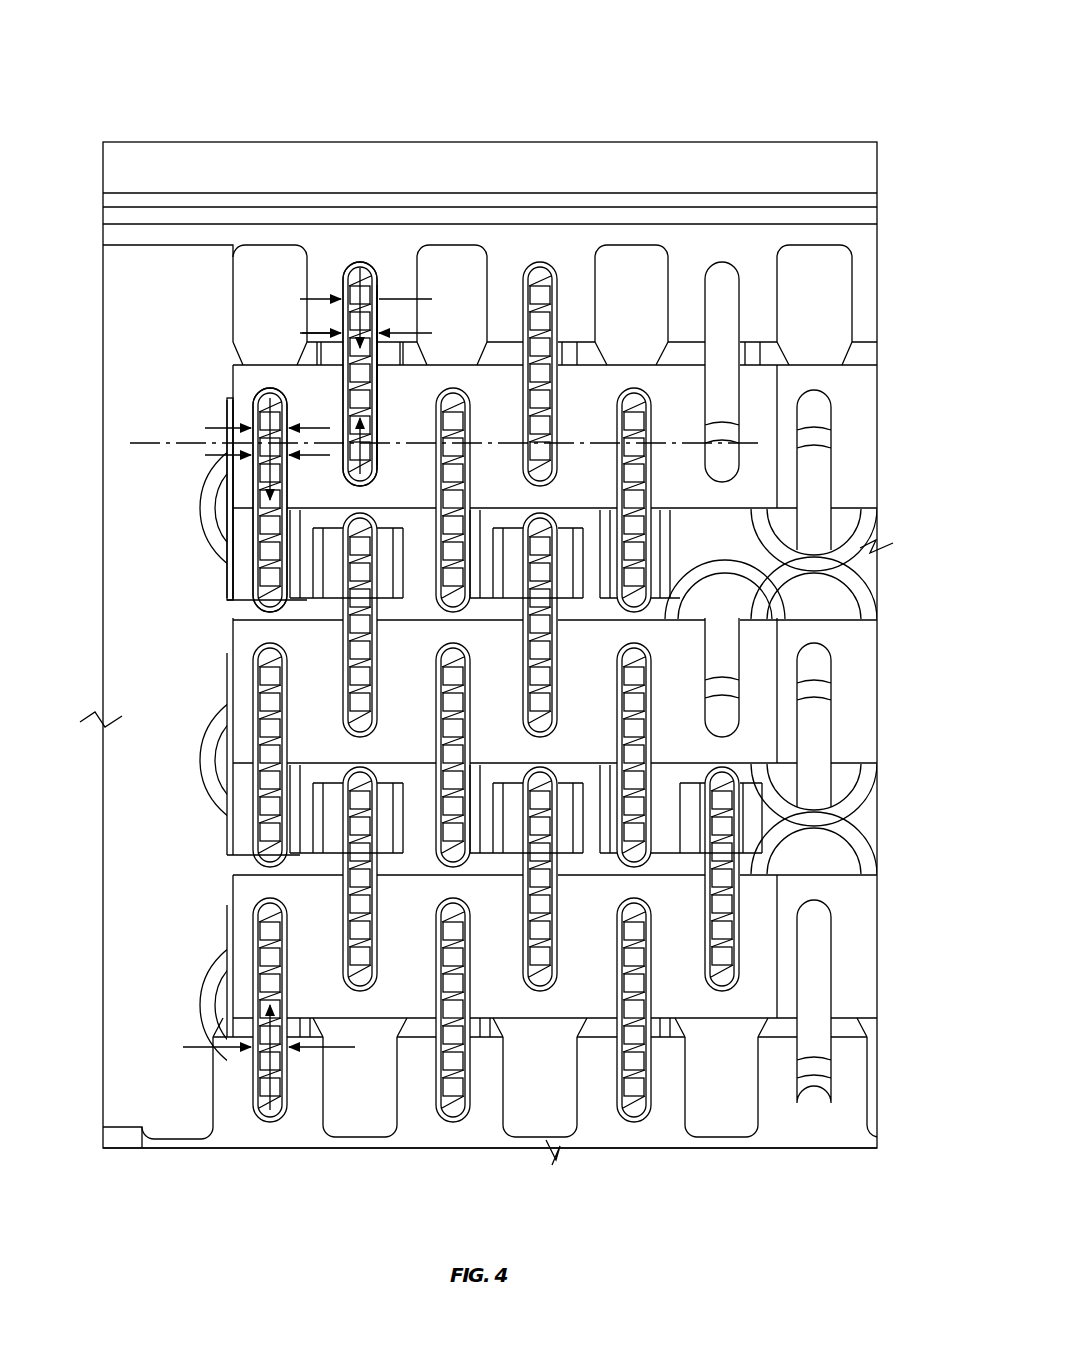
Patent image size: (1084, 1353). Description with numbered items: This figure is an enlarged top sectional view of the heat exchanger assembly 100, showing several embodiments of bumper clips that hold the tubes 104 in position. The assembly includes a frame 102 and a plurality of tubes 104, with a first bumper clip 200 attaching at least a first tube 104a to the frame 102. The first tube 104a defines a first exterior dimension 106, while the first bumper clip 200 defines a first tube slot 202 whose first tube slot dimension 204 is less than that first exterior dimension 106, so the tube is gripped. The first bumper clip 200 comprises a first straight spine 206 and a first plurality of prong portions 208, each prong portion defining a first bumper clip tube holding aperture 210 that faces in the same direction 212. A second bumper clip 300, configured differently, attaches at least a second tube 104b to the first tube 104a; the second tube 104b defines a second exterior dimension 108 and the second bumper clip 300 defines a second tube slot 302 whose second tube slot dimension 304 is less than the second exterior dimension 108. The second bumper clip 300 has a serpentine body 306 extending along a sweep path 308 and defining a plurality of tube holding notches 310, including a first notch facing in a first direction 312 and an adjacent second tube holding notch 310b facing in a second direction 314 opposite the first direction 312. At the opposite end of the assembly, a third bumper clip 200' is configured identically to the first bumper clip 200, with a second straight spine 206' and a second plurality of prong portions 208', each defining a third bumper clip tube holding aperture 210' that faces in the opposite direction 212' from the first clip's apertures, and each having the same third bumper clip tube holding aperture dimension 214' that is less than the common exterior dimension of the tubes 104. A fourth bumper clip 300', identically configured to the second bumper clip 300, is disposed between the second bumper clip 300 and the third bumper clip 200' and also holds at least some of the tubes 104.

The heat exchanger assembly 100 is at (553, 75).
The frame 102 is at (718, 210).
The tubes 104 is at (470, 465).
The first tube 104a is at (341, 283).
The second tube 104b is at (257, 547).
The first exterior dimension 106 is at (383, 290).
The second exterior dimension 108 is at (218, 428).
The first bumper clip 200 is at (362, 291).
The first tube slot 202 is at (300, 299).
The first tube slot dimension 204 is at (300, 333).
The first straight spine 206 is at (555, 259).
The first plurality of prong portions 208 is at (542, 293).
The first bumper clip tube holding aperture 210 is at (430, 321).
The same direction 212 is at (392, 197).
The second bumper clip 300 is at (224, 500).
The second tube slot 302 is at (268, 388).
The second tube slot dimension 304 is at (327, 447).
The serpentine body 306 is at (600, 482).
The sweep path 308 is at (758, 443).
The tube holding notches 310 is at (373, 410).
The second tube holding notch 310b is at (257, 523).
The first direction 312 is at (369, 450).
The second direction 314 is at (257, 488).
The third bumper clip 200' is at (490, 1114).
The second straight spine 206' is at (490, 1179).
The second plurality of prong portions 208' is at (509, 1088).
The third bumper clip tube holding aperture 210' is at (324, 1051).
The opposite direction 212' is at (289, 1103).
The third bumper clip tube holding aperture dimension 214' is at (242, 1016).
The fourth bumper clip 300' is at (588, 956).